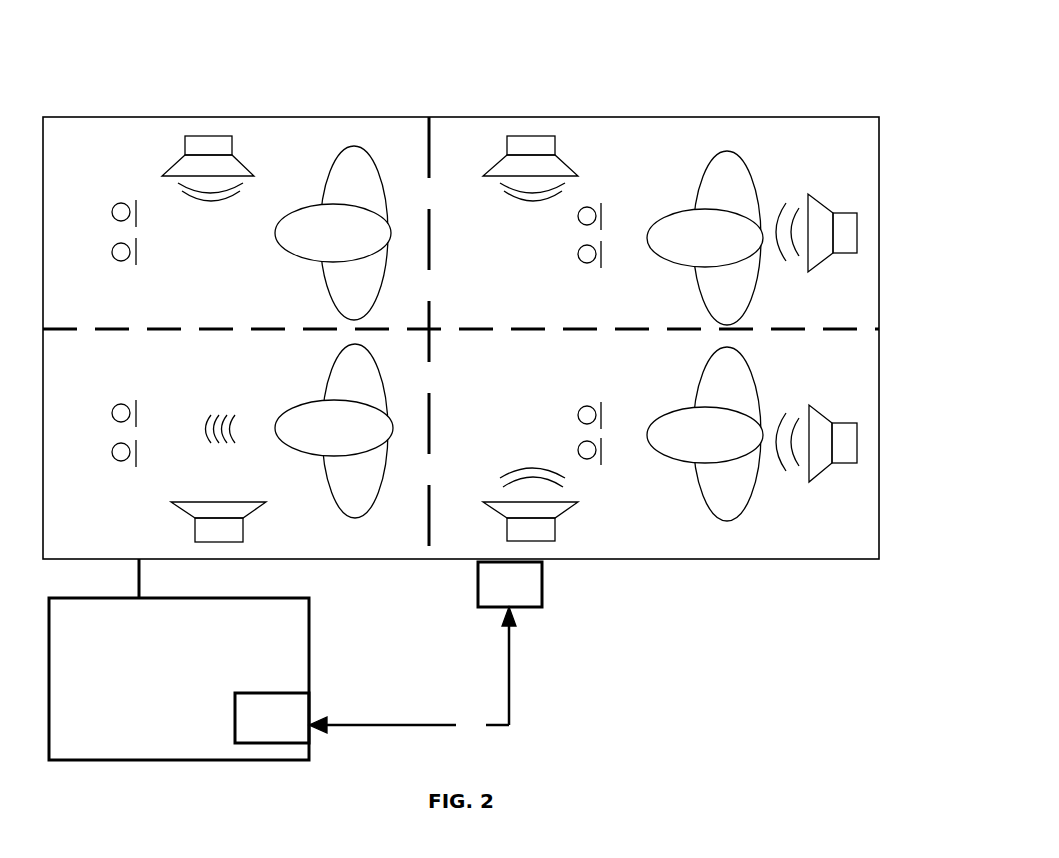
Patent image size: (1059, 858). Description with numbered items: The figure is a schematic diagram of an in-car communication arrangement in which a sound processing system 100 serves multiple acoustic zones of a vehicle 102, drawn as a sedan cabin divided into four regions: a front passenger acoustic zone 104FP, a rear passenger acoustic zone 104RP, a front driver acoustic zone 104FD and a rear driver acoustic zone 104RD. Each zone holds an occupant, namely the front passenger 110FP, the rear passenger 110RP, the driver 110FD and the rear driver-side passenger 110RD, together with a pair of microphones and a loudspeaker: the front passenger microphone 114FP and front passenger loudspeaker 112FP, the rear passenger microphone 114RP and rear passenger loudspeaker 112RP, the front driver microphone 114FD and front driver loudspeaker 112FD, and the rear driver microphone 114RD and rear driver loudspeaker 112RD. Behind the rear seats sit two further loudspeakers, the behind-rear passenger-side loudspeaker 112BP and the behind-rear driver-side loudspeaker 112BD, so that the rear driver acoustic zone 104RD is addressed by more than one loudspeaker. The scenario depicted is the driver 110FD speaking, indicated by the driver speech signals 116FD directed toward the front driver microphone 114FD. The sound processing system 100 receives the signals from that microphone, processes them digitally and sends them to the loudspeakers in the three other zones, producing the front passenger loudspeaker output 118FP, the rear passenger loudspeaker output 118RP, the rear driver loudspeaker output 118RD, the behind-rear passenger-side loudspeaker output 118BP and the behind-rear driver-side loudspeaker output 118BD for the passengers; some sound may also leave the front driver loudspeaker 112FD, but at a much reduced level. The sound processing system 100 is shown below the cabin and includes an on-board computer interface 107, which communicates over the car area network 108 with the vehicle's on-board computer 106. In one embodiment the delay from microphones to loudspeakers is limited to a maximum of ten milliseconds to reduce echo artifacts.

The sound processing system 100 is at (324, 659).
The vehicle 102 is at (419, 100).
The front passenger acoustic zone 104FP is at (181, 295).
The rear passenger acoustic zone 104RP is at (488, 295).
The front driver acoustic zone 104FD is at (182, 377).
The rear driver acoustic zone 104RD is at (489, 379).
The on-board computer 106 is at (510, 584).
The on-board computer interface 107 is at (272, 718).
The car area network (CAN bus) 108 is at (412, 670).
The front passenger 110FP is at (333, 233).
The rear passenger 110RP is at (705, 238).
The driver 110FD is at (334, 431).
The rear driver-side passenger 110RD is at (705, 434).
The front passenger loudspeaker 112FP is at (210, 136).
The rear passenger loudspeaker 112RP is at (531, 136).
The front driver loudspeaker 112FD is at (243, 542).
The rear driver loudspeaker 112RD is at (535, 543).
The behind-rear passenger-side loudspeaker 112BP is at (833, 213).
The behind-rear driver-side loudspeaker 112BD is at (818, 477).
The front passenger microphone 114FP is at (122, 203).
The rear passenger microphone 114RP is at (605, 222).
The front driver microphone 114FD is at (135, 463).
The rear driver microphone 114RD is at (601, 437).
The driver speech signals 116FD is at (240, 445).
The front passenger loudspeaker output 118FP is at (250, 180).
The rear passenger loudspeaker output 118RP is at (564, 195).
The rear driver loudspeaker output 118RD is at (573, 478).
The behind-rear passenger-side loudspeaker output 118BP is at (787, 208).
The behind-rear driver-side loudspeaker output 118BD is at (787, 462).